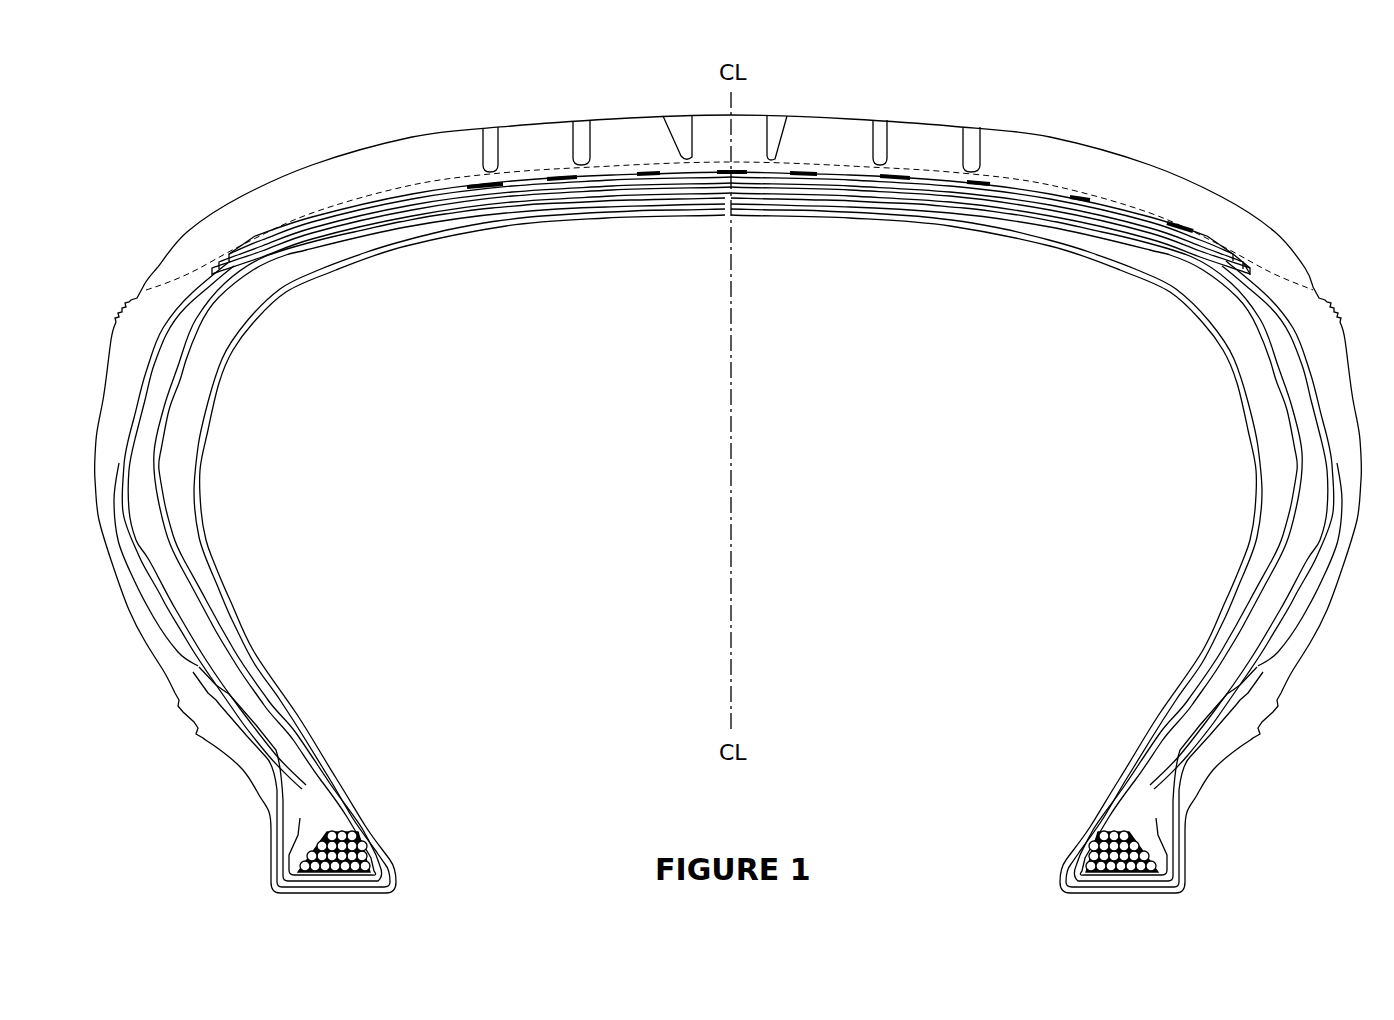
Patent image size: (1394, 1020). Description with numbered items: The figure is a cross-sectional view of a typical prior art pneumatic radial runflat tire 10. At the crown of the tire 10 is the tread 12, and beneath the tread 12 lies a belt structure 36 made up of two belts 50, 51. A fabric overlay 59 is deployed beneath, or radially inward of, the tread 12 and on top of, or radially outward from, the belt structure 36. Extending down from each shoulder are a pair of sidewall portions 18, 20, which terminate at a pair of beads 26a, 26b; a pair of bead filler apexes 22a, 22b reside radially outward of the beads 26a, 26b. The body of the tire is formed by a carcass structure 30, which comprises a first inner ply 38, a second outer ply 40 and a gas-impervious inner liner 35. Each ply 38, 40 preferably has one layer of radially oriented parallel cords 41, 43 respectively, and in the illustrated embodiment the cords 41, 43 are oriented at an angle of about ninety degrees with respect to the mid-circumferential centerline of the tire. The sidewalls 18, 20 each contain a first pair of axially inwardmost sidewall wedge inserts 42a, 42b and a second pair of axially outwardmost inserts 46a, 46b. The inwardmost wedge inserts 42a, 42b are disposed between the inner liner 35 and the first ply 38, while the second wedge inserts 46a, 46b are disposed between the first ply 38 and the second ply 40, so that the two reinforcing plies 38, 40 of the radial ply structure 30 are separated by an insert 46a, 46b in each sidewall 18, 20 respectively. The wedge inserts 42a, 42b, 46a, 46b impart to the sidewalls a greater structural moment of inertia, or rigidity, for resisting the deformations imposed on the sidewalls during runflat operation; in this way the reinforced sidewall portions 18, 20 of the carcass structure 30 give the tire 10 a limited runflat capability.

The pneumatic radial runflat tire 10 is at (1243, 124).
The tread 12 is at (917, 138).
The sidewall portion 18 is at (100, 415).
The sidewall portion 20 is at (1362, 412).
The bead filler apex 22a is at (292, 750).
The bead filler apex 22b is at (1147, 783).
The bead 26a is at (347, 842).
The bead 26b is at (1115, 838).
The carcass structure 30 is at (800, 199).
The inner liner 35 is at (250, 335).
The belt structure 36 is at (827, 192).
The first inner ply 38 is at (1277, 357).
The second outer ply 40 is at (1300, 337).
The cords 41 is at (1283, 387).
The sidewall wedge insert 42a is at (233, 630).
The sidewall wedge insert 42b is at (1280, 515).
The cords 43 is at (1340, 352).
The sidewall wedge insert 46a is at (147, 513).
The sidewall wedge insert 46b is at (1343, 365).
The belt 50 is at (1140, 223).
The belt 51 is at (1230, 257).
The fabric overlay 59 is at (1123, 207).